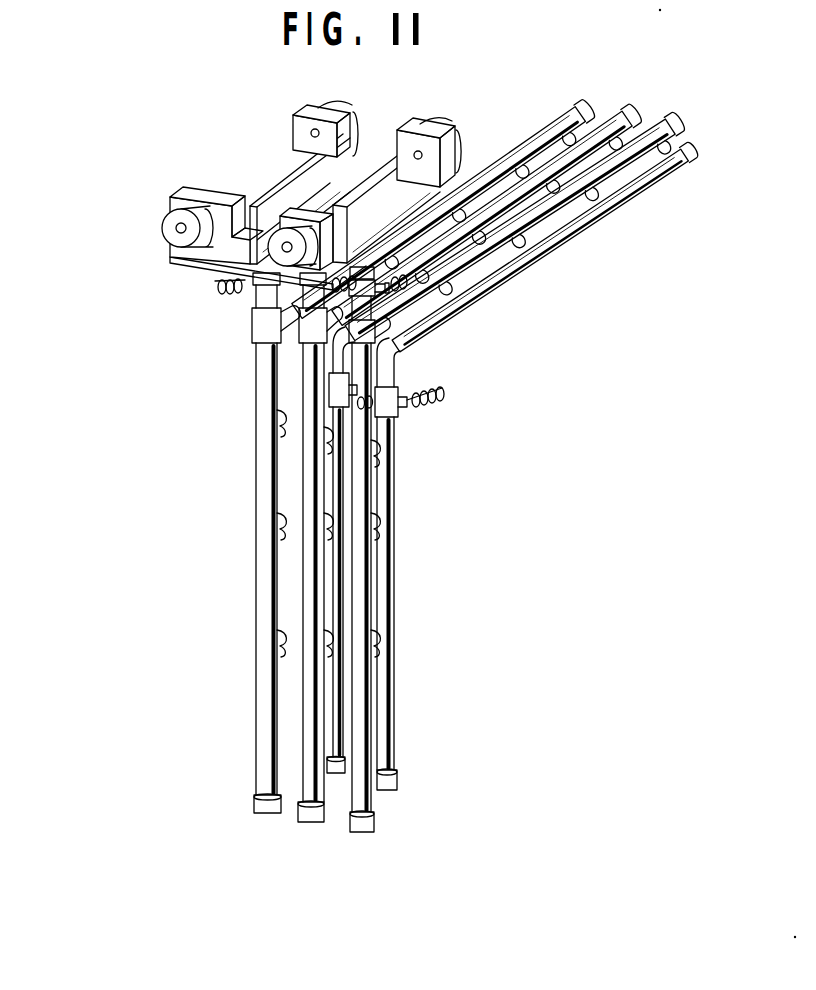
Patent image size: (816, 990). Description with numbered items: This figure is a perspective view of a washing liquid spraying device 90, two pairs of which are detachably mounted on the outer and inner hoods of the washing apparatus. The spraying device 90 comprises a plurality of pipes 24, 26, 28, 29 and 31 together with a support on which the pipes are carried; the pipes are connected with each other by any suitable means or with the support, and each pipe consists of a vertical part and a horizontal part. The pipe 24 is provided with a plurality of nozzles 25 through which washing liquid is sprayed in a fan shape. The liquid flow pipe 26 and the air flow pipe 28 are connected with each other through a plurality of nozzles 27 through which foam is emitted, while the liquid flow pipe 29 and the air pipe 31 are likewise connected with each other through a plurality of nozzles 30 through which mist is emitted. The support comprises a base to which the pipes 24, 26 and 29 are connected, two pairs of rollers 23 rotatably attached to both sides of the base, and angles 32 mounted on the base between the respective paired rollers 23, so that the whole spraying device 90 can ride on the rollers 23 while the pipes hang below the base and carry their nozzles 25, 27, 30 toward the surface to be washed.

The rollers 23 is at (443, 117).
The angles 32 is at (273, 183).
The pipe 24 is at (262, 676).
The nozzles 25 is at (275, 545).
The liquid flow pipe 26 is at (305, 794).
The nozzles 27 is at (320, 673).
The air flow pipe 28 is at (337, 774).
The liquid flow pipe 29 is at (370, 794).
The nozzles 30 is at (370, 678).
The air pipe 31 is at (388, 597).
The washing liquid spraying device 90 is at (480, 327).